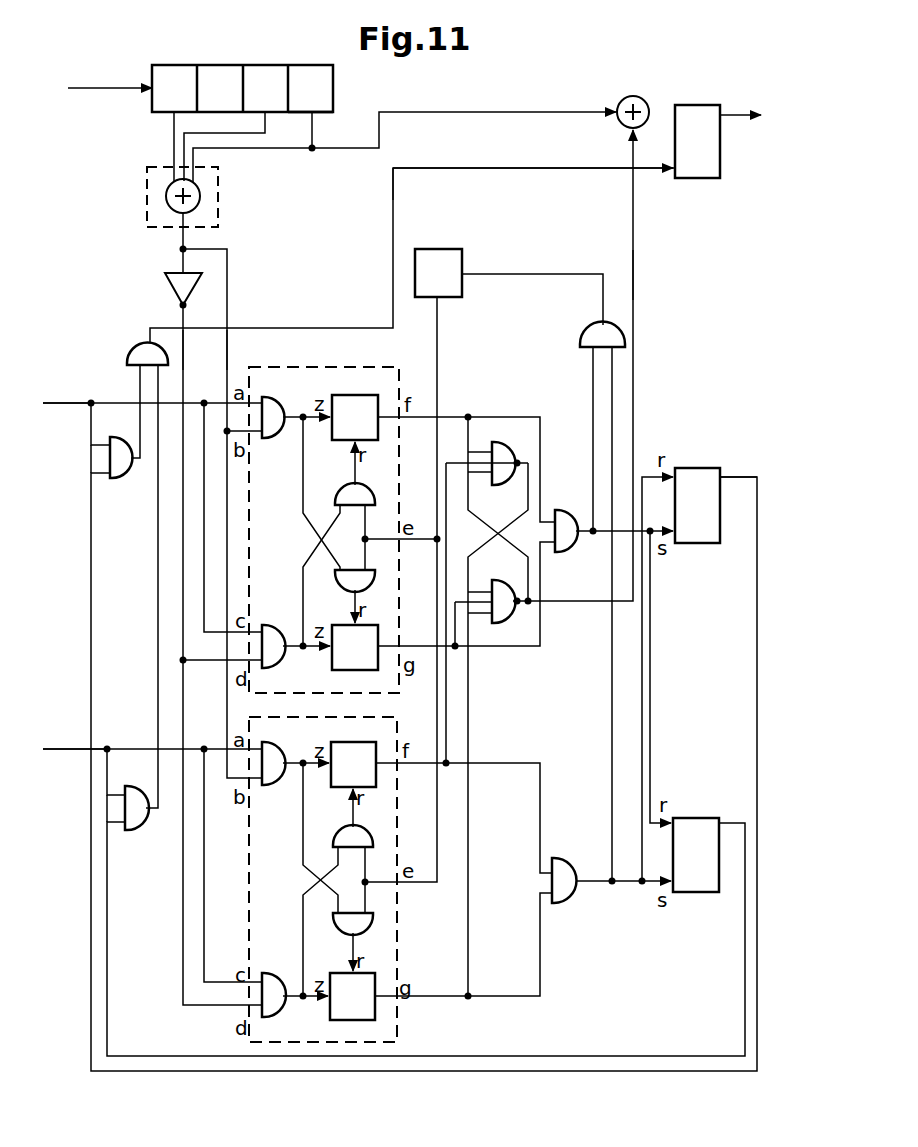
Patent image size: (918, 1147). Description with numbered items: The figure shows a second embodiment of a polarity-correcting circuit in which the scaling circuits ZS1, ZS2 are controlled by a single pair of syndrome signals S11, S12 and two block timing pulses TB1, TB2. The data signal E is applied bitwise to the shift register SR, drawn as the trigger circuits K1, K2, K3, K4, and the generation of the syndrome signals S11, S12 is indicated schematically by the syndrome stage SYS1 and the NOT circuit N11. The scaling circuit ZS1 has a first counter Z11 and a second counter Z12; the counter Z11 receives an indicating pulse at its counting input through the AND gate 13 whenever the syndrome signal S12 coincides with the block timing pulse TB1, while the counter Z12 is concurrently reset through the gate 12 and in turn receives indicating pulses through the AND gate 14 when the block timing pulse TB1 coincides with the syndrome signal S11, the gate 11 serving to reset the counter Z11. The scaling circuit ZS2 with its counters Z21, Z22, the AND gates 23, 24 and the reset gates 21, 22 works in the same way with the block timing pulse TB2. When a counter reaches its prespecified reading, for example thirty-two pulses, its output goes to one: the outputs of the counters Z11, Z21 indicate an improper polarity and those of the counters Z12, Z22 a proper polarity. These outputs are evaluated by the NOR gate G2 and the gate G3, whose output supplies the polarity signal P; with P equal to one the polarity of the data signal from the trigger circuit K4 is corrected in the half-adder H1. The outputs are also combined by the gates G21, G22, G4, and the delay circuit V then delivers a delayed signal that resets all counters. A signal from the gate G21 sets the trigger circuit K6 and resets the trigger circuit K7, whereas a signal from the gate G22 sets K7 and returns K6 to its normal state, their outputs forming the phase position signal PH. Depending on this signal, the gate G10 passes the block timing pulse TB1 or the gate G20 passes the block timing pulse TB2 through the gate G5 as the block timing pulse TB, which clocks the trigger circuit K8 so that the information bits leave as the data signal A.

The gate 11 is at (361, 488).
The gate 12 is at (337, 589).
The AND gate 13 is at (286, 436).
The AND gate 14 is at (285, 660).
The gate 21 is at (344, 834).
The gate 22 is at (342, 932).
The AND gate 23 is at (286, 782).
The AND gate 24 is at (282, 1010).
The shift register SR is at (257, 62).
The trigger circuit K1 is at (178, 88).
The trigger circuit K2 is at (224, 88).
The trigger circuit K3 is at (269, 88).
The trigger circuit K4 is at (310, 94).
The syndrome stage SYS1 is at (218, 204).
The NOT circuit N11 is at (176, 293).
The gate G5 is at (135, 352).
The gate G10 is at (130, 482).
The gate G20 is at (150, 833).
The syndrome signal S11 is at (207, 350).
The syndrome signal S12 is at (252, 350).
The scaling circuit ZS1 is at (396, 366).
The scaling circuit ZS2 is at (399, 1024).
The first counter Z11 is at (355, 417).
The second counter Z12 is at (355, 647).
The first counter Z21 is at (353, 764).
The second counter Z22 is at (352, 996).
The block timing pulse TB is at (451, 188).
The block timing pulse TB1 is at (63, 390).
The block timing pulse TB2 is at (71, 735).
The delay circuit V is at (438, 273).
The NOR gate G2 is at (499, 448).
The gate G3 is at (501, 616).
The gate G4 is at (588, 331).
The gate G21 is at (557, 554).
The gate G22 is at (555, 910).
The half-adder H1 is at (619, 104).
The trigger circuit K8 is at (697, 141).
The trigger circuit K6 is at (697, 505).
The trigger circuit K7 is at (696, 855).
The data signal E is at (49, 90).
The data signal A is at (746, 95).
The polarity signal P is at (644, 275).
The phase position signal PH is at (740, 462).